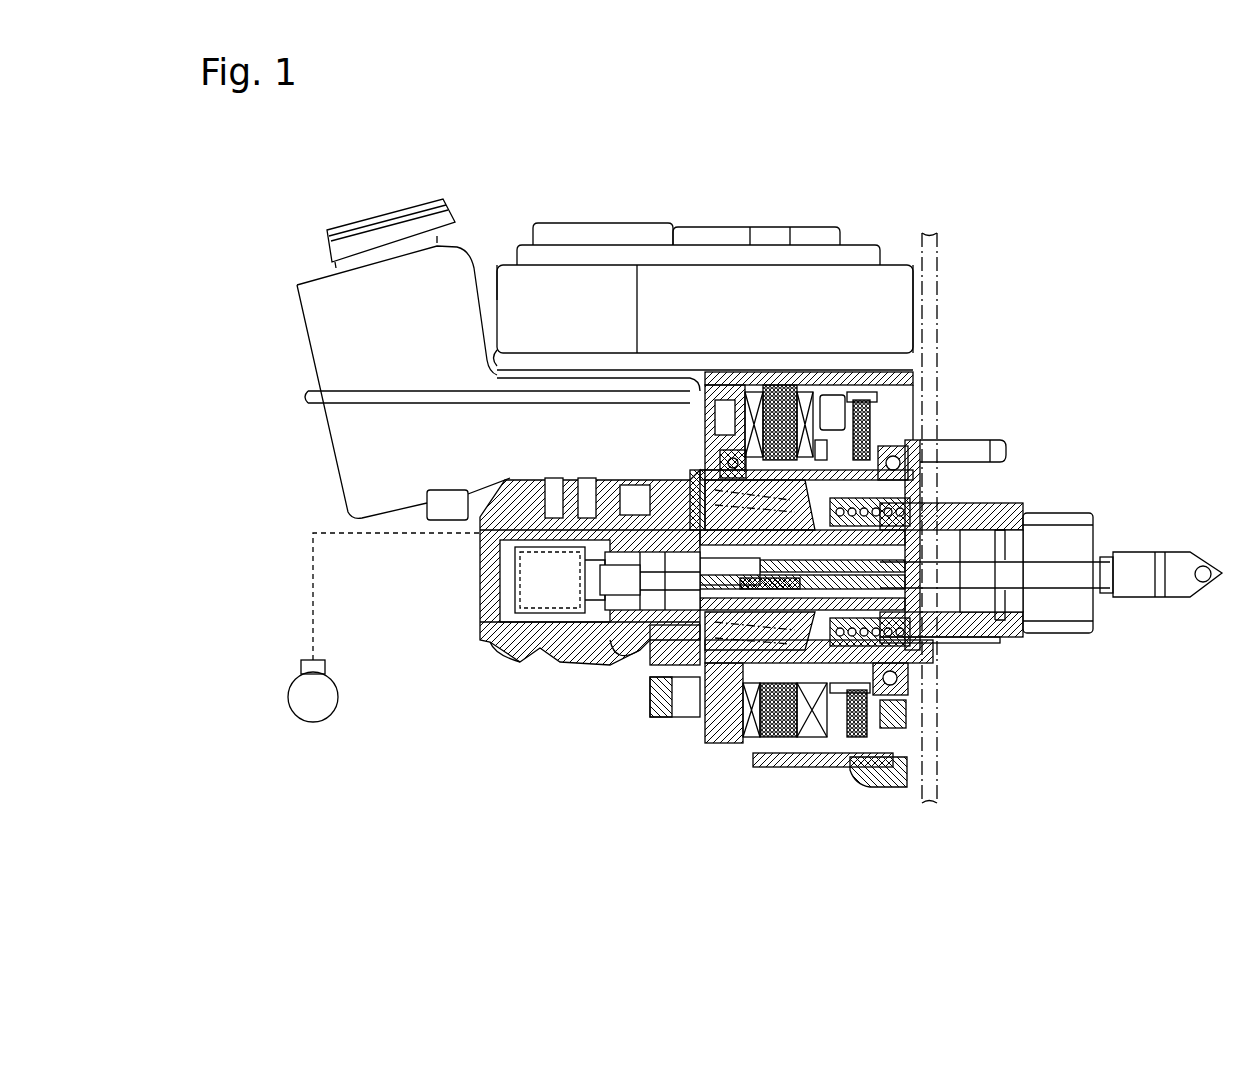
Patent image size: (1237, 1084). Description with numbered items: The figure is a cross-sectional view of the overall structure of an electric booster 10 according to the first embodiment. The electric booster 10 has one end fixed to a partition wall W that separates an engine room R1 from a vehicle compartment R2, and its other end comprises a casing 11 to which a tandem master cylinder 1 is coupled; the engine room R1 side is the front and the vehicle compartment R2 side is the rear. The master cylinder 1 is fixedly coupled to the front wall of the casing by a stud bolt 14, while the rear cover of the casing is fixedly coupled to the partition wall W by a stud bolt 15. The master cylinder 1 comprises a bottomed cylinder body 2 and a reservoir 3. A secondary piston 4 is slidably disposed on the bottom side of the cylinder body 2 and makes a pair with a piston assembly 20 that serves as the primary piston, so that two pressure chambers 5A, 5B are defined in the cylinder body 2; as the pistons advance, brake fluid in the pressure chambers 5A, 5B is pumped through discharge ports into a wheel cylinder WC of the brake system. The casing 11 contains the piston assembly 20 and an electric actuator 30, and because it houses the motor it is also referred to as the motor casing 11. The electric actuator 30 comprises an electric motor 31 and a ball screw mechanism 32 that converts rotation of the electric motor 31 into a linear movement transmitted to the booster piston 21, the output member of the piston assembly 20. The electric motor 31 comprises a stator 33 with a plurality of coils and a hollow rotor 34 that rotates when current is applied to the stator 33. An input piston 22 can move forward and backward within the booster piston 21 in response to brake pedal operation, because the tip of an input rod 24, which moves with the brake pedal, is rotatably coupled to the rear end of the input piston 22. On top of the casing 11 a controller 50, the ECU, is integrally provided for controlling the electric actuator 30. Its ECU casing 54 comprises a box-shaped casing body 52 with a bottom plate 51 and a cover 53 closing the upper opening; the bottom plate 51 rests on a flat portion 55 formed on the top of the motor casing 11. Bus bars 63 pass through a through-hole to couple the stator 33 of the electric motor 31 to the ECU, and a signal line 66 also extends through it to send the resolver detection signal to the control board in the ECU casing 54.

The tandem master cylinder 1 is at (447, 608).
The cylinder body 2 is at (480, 540).
The reservoir 3 is at (348, 462).
The secondary piston 4 is at (573, 650).
The pressure chamber 5A is at (630, 640).
The pressure chamber 5B is at (523, 640).
The electric booster 10 is at (1015, 375).
The casing 11 is at (830, 780).
The stud bolt 14 is at (680, 723).
The stud bolt 15 is at (1010, 452).
The piston assembly 20 is at (788, 828).
The booster piston 21 is at (725, 720).
The input piston 22 is at (770, 745).
The input rod 24 is at (1075, 572).
The electric actuator 30 is at (843, 777).
The electric motor 31 is at (768, 372).
The ball screw mechanism 32 is at (920, 447).
The stator 33 is at (813, 730).
The rotor 34 is at (893, 720).
The controller 50 is at (673, 215).
The bottom plate 51 is at (508, 360).
The casing body 52 is at (510, 285).
The cover 53 is at (563, 222).
The ECU casing 54 is at (913, 302).
The flat portion 55 is at (805, 370).
The bus bar 63 is at (843, 370).
The signal line 66 is at (860, 370).
The partition wall W is at (940, 770).
The wheel cylinder WC is at (300, 698).
The engine room R1 is at (482, 752).
The vehicle compartment R2 is at (1095, 742).